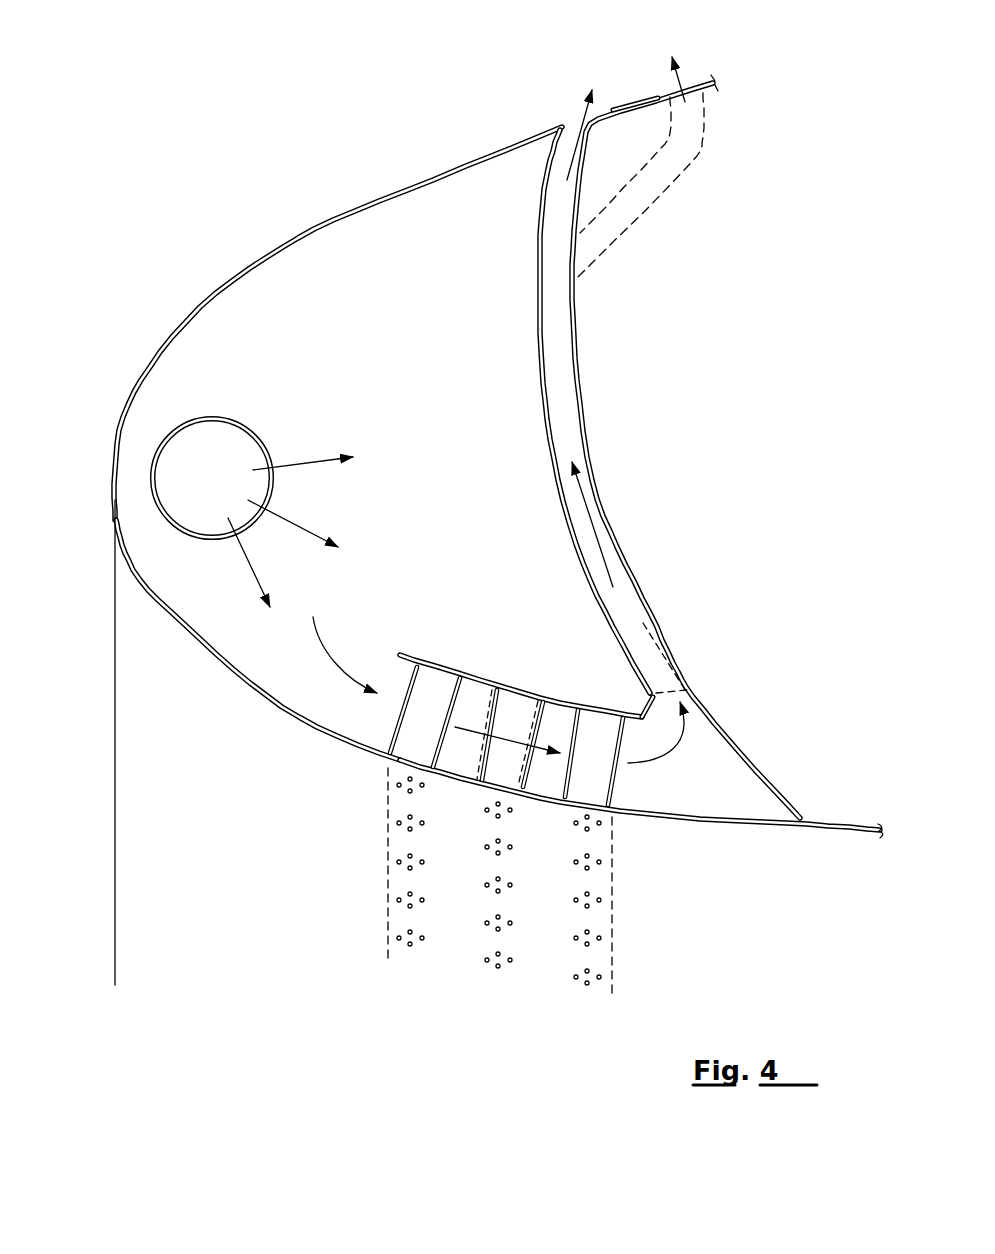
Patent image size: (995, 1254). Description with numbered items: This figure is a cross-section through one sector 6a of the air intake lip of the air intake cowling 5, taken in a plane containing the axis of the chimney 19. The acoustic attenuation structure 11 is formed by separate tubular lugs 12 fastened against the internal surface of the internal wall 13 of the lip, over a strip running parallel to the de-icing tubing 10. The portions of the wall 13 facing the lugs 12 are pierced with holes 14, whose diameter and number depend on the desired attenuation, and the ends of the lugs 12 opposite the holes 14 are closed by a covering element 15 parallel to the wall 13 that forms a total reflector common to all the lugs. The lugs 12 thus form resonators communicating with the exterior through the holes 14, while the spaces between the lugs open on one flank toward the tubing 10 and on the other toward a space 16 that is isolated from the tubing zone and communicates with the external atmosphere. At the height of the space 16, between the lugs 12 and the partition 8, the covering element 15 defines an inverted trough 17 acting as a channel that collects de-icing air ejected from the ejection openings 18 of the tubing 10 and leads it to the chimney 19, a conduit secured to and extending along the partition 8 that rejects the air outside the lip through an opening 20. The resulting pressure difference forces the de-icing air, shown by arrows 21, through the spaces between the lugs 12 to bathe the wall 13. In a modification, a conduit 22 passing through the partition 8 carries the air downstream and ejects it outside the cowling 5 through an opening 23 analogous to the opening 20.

The air intake cowling 5 is at (705, 74).
The sector 6a is at (180, 318).
The partition 8 is at (608, 512).
The tubing 10 is at (165, 432).
The acoustic attenuation structure 11 is at (383, 653).
The tubular lugs 12 is at (395, 750).
The internal wall 13 is at (686, 820).
The holes 14 is at (386, 770).
The covering element 15 is at (443, 668).
The space 16 is at (703, 773).
The inverted trough 17 is at (627, 697).
The ejection openings 18 is at (265, 513).
The chimney 19 is at (533, 318).
The opening 20 is at (570, 127).
The arrows 21 is at (517, 737).
The conduit 22 is at (667, 190).
The opening 23 is at (660, 88).